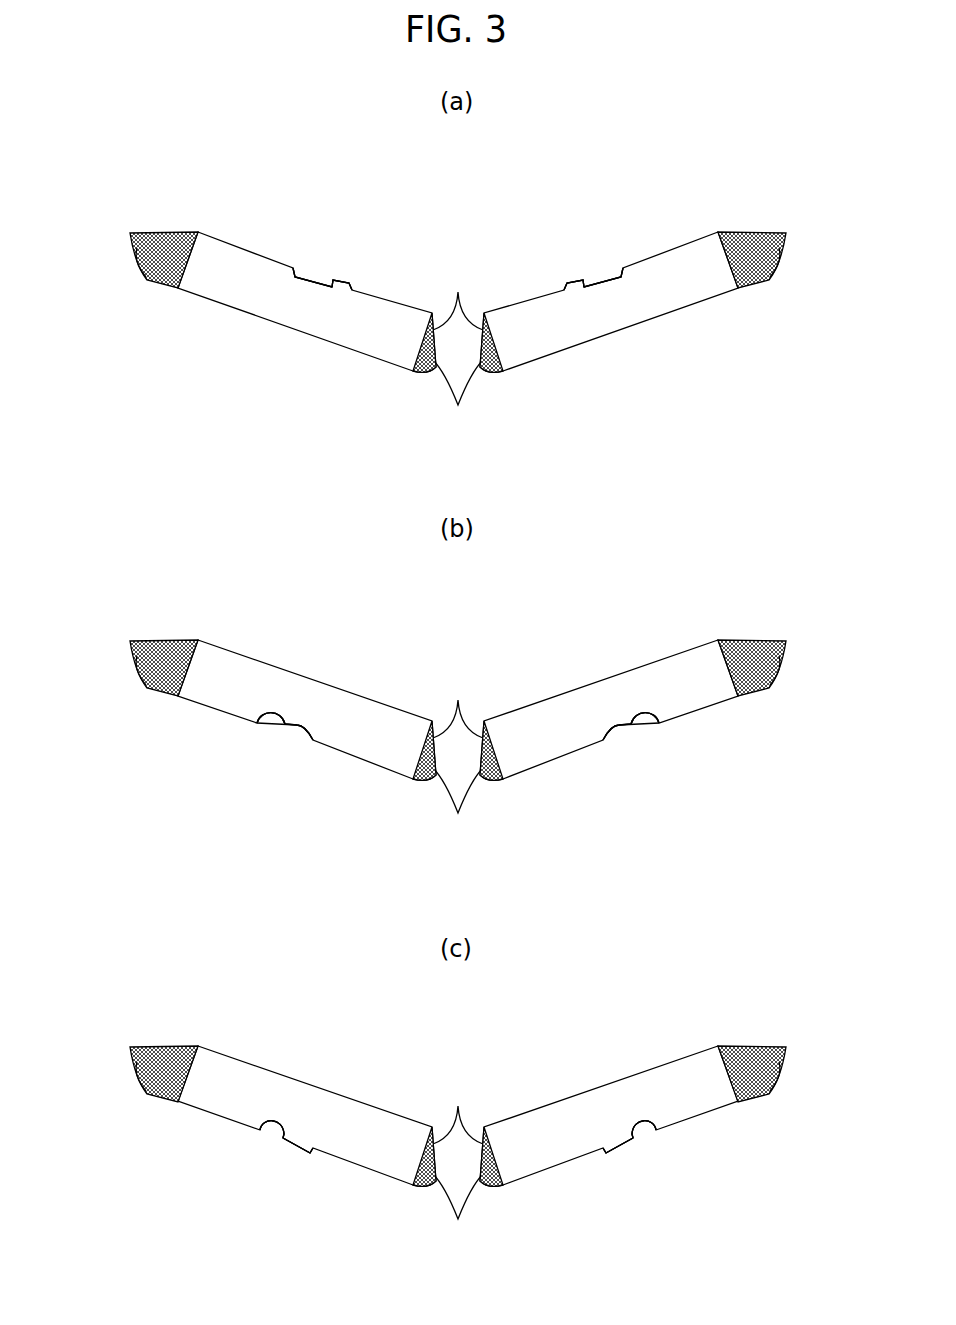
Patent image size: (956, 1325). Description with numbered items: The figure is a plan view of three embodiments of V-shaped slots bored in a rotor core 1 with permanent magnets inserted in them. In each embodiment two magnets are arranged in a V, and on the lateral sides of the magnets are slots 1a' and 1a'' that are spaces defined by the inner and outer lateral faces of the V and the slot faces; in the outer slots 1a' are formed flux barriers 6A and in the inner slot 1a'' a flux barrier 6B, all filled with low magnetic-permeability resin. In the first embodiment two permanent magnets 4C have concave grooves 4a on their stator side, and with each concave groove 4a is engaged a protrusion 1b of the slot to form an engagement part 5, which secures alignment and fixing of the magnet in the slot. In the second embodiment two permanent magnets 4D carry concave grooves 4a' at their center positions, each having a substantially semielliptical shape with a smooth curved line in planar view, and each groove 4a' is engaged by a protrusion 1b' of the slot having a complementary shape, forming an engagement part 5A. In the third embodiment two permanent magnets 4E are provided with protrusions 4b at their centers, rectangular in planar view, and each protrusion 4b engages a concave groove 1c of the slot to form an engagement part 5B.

The rotor core 1 is at (466, 210).
The slot 1a' is at (462, 665).
The slot 1a'' is at (458, 784).
The protrusion 1b is at (458, 243).
The protrusion 1b' is at (462, 767).
The concave groove 1c is at (452, 1167).
The concave groove 4a is at (458, 251).
The concave groove 4a' is at (463, 753).
The protrusion 4b is at (458, 1179).
The permanent magnet 4C is at (245, 252).
The permanent magnet 4D is at (458, 693).
The permanent magnet 4E is at (458, 1101).
The engagement part 5 is at (388, 222).
The engagement part 5A is at (458, 782).
The engagement part 5B is at (458, 1190).
The flux barrier 6A is at (763, 231).
The flux barrier 6B is at (458, 293).